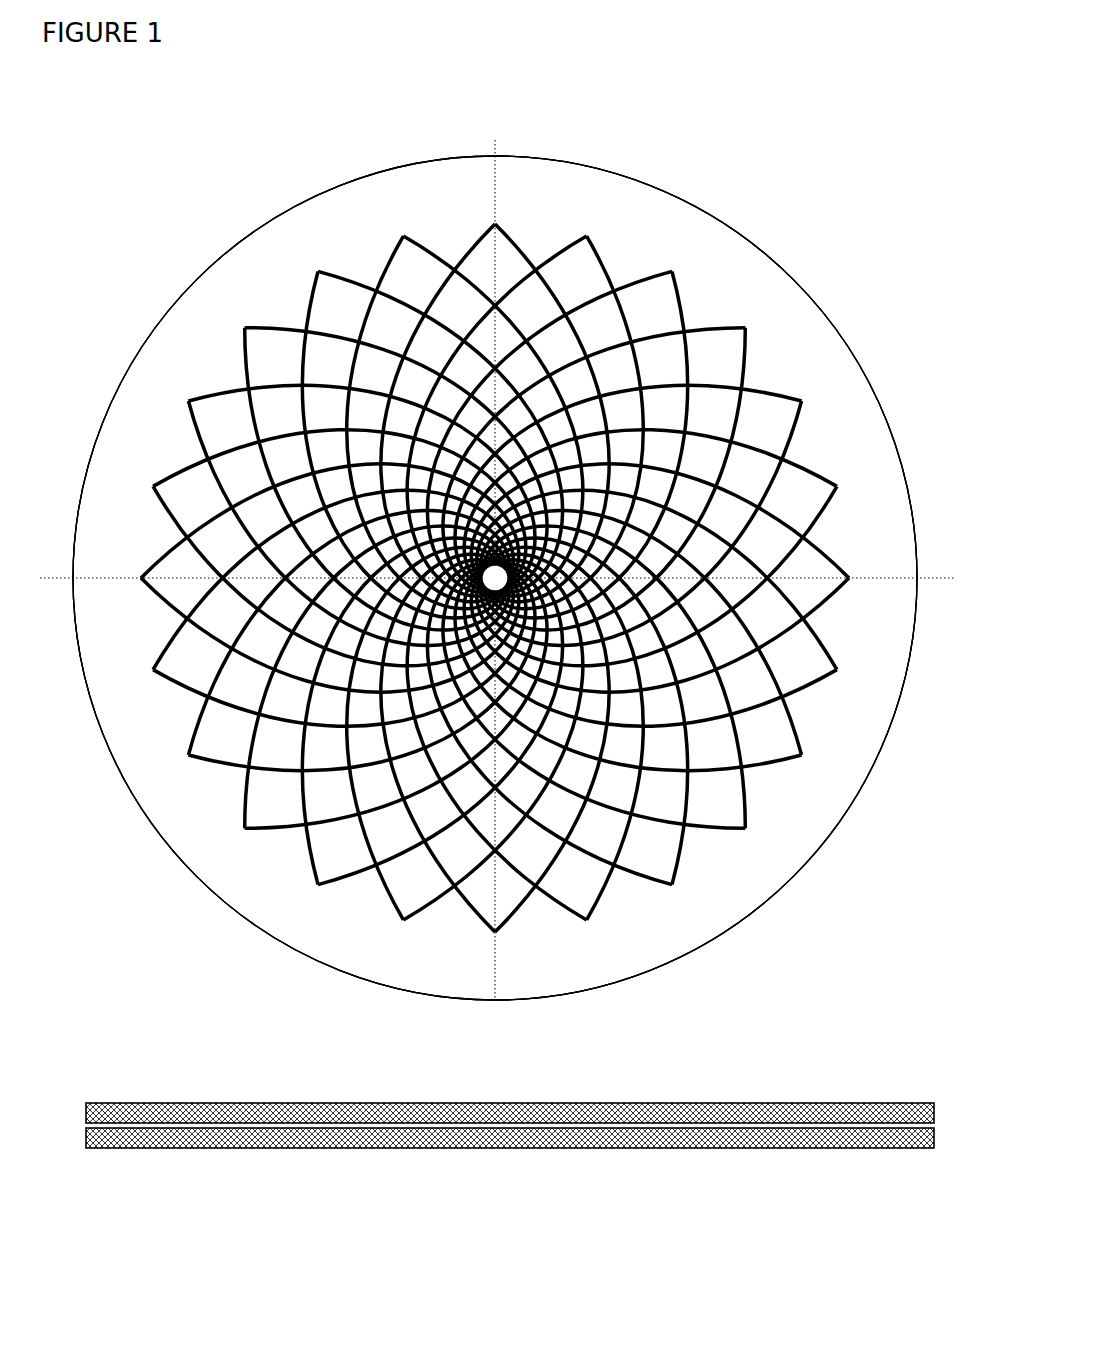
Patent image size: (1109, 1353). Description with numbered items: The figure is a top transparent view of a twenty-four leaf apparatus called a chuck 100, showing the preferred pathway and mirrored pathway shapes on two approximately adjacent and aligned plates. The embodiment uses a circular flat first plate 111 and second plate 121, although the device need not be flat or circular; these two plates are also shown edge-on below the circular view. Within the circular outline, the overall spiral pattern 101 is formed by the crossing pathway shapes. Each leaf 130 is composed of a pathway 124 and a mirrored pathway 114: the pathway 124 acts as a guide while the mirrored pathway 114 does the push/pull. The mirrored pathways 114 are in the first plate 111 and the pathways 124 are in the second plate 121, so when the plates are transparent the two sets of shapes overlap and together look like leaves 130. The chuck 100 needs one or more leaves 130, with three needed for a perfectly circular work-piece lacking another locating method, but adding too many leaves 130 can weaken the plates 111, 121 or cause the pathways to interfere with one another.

The chuck 100 is at (495, 129).
The spiral grid pattern 101 is at (498, 598).
The first plate 111 is at (216, 240).
The second plate 121 is at (161, 293).
The mirrored pathway (MPW) 114 is at (146, 508).
The pathway (PW) 124 is at (275, 420).
The leaf 130 is at (604, 231).